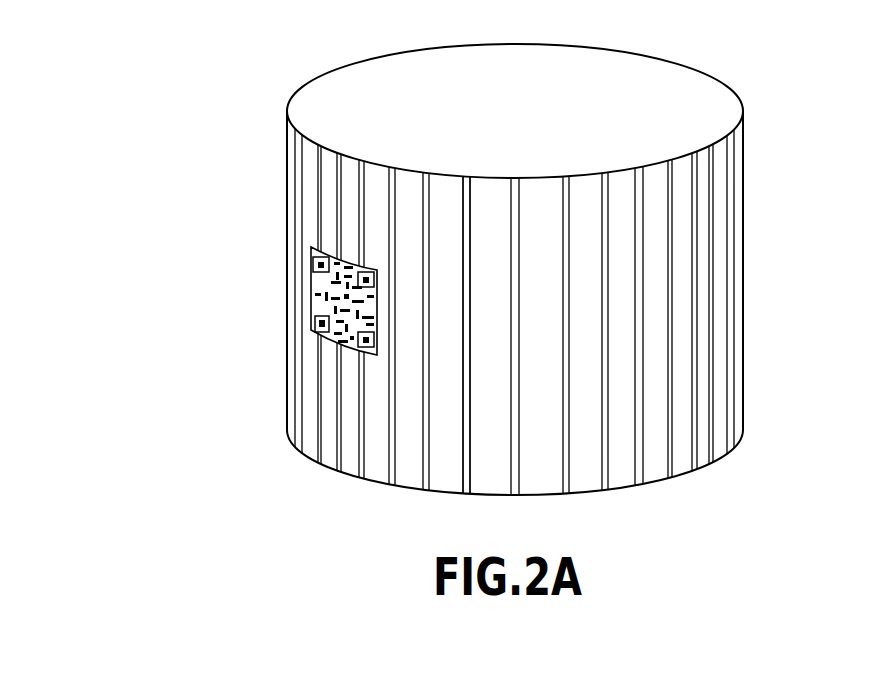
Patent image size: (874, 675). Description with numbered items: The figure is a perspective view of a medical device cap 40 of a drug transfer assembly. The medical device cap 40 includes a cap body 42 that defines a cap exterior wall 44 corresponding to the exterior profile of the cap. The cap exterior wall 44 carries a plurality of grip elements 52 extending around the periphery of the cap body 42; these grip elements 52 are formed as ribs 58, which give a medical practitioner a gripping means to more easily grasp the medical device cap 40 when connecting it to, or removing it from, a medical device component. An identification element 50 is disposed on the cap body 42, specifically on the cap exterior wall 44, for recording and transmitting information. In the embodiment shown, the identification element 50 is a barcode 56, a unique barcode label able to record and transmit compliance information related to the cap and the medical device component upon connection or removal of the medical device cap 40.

The medical device cap 40 is at (232, 159).
The cap body 42 is at (744, 378).
The cap exterior wall 44 is at (744, 153).
The identification element 50 is at (307, 305).
The grip elements 52 is at (520, 213).
The barcode 56 is at (317, 287).
The ribs 58 is at (462, 468).